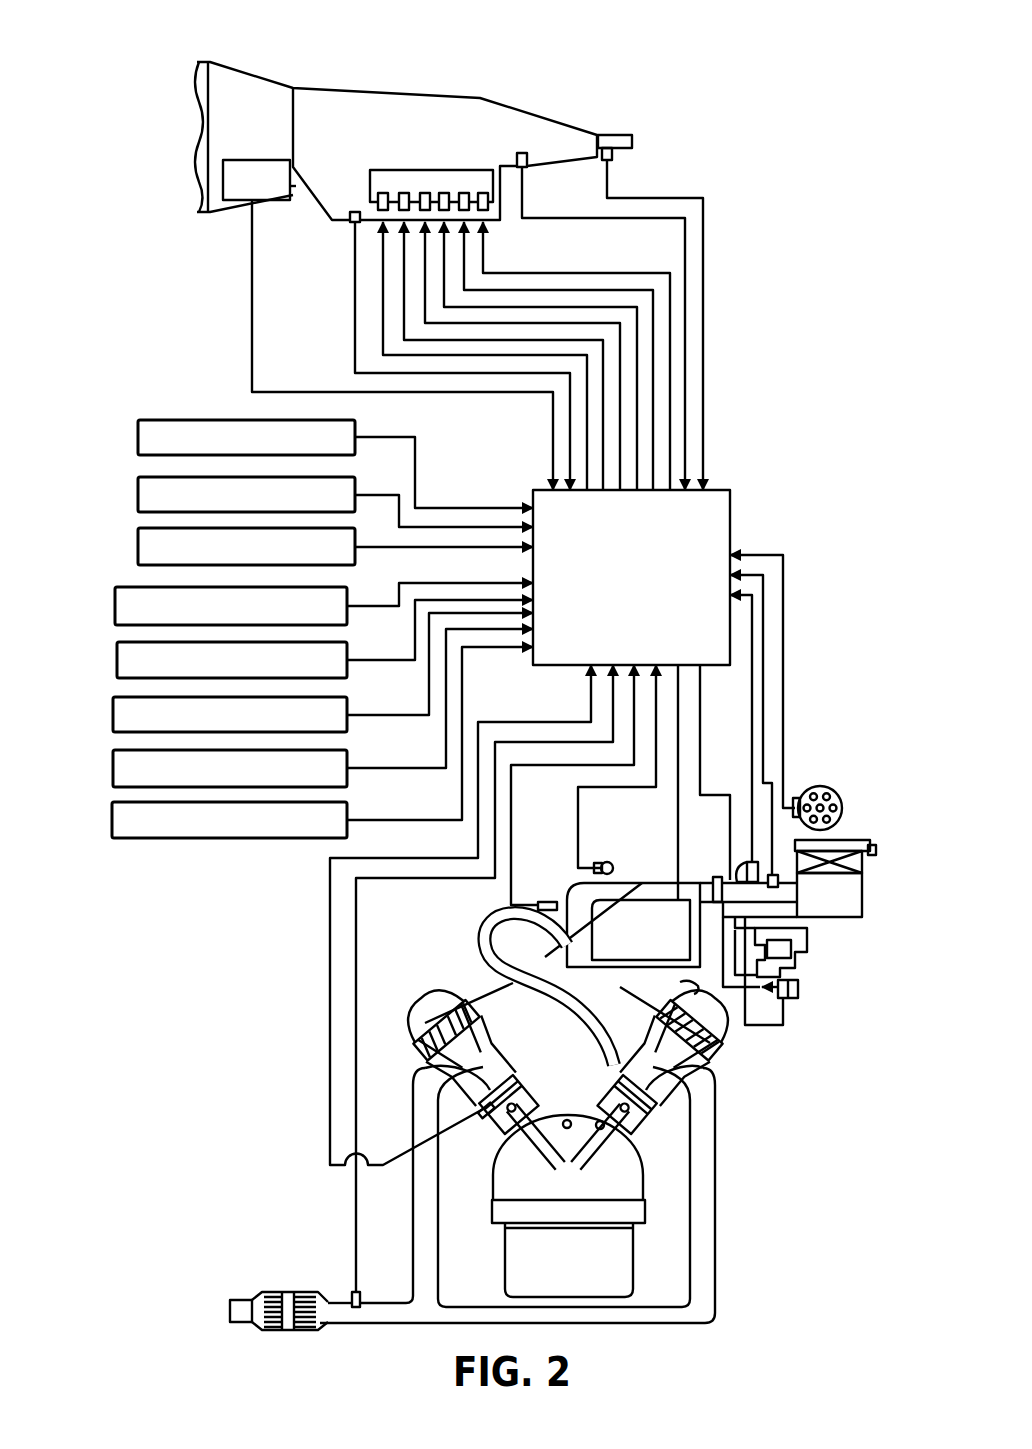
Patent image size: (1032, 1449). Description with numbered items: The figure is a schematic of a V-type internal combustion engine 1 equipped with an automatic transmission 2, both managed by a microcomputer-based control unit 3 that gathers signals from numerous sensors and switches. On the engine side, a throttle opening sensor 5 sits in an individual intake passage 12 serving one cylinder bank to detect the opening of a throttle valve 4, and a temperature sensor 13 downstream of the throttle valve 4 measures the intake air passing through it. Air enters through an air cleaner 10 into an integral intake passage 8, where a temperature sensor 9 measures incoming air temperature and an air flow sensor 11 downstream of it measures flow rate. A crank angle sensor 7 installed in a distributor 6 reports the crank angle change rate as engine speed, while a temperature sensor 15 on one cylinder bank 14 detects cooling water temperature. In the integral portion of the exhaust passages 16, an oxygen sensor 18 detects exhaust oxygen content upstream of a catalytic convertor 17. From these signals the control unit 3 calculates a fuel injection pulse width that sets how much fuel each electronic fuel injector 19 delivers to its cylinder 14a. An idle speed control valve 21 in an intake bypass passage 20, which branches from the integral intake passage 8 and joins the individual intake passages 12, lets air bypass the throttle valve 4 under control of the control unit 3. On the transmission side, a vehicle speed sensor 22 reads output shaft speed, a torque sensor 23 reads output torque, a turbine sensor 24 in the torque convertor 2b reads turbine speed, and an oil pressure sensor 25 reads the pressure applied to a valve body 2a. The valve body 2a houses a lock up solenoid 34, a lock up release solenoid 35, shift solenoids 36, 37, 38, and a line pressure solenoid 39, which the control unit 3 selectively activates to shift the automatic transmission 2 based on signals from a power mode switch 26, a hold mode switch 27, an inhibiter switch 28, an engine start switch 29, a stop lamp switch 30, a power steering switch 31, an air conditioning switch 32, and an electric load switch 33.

The V-type internal combustion engine 1 is at (640, 1197).
The automatic transmission 2 is at (609, 104).
The valve body 2a is at (370, 190).
The torque convertor 2b is at (246, 62).
The control unit 3 is at (620, 597).
The throttle valve 4 is at (642, 883).
The throttle opening sensor 5 is at (603, 862).
The distributor 6 is at (838, 789).
The crank angle sensor 7 is at (793, 800).
The integral intake passage 8 is at (710, 882).
The temperature sensor 9 is at (773, 875).
The air cleaner 10 is at (862, 843).
The air flow sensor 11 is at (750, 862).
The individual intake passage 12 is at (568, 882).
The temperature sensor 13 is at (541, 902).
The cylinder bank 14 is at (500, 1150).
The cylinder 14a is at (444, 1076).
The temperature sensor 15 is at (490, 1120).
The exhaust passages 16 is at (372, 1324).
The catalytic convertor 17 is at (272, 1292).
The oxygen sensor 18 is at (352, 1292).
The electronic fuel injector 19 is at (500, 986).
The intake bypass passage 20 is at (808, 948).
The idle speed control valve 21 is at (799, 989).
The vehicle speed sensor 22 is at (350, 223).
The torque sensor 23 is at (613, 160).
The turbine sensor 24 is at (244, 201).
The oil pressure sensor 25 is at (527, 153).
The power mode switch 26 is at (138, 432).
The hold mode switch 27 is at (138, 490).
The inhibiter switch 28 is at (138, 546).
The engine start switch 29 is at (115, 603).
The stop lamp switch 30 is at (117, 658).
The power steering switch 31 is at (113, 712).
The air conditioning switch 32 is at (113, 768).
The electric load switch 33 is at (112, 822).
The lock up solenoid 34 is at (405, 192).
The lock up release solenoid 35 is at (484, 192).
The shift solenoid 36 is at (425, 192).
The shift solenoid 37 is at (444, 192).
The shift solenoid 38 is at (464, 192).
The line pressure solenoid 39 is at (381, 192).